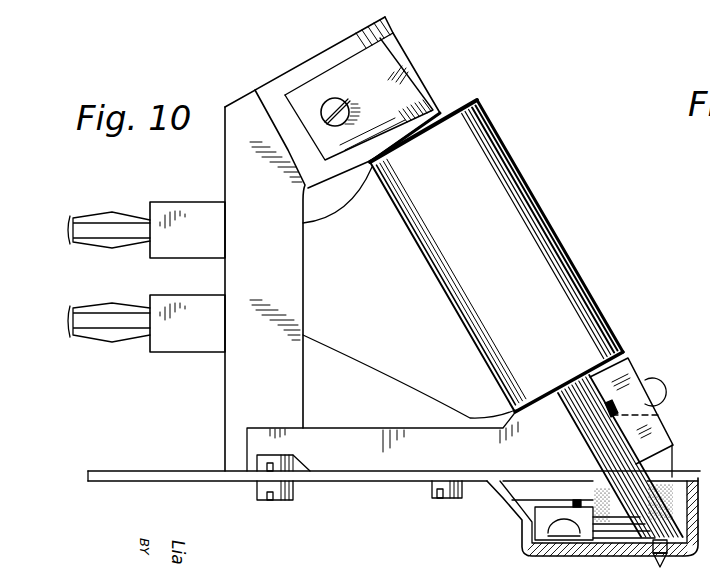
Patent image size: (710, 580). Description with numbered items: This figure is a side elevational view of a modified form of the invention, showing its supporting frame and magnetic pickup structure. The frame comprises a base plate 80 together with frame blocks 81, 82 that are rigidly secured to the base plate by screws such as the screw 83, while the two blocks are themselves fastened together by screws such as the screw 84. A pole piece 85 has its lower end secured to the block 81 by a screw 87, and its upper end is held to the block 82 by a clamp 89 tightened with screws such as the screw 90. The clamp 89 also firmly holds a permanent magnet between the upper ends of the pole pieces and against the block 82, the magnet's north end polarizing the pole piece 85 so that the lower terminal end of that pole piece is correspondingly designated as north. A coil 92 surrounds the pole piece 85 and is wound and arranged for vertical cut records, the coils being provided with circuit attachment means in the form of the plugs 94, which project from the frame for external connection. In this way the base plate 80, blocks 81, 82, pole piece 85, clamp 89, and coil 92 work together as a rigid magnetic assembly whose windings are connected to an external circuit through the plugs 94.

The base plate 80 is at (360, 480).
The frame block 81 is at (341, 436).
The frame block 82 is at (237, 375).
The screw 83 is at (283, 492).
The screw 84 is at (265, 463).
The pole piece 85 is at (620, 463).
The screw 87 is at (660, 388).
The clamp 89 is at (423, 72).
The screw 90 is at (350, 108).
The coil 92 is at (523, 210).
The plug 94 is at (73, 247).